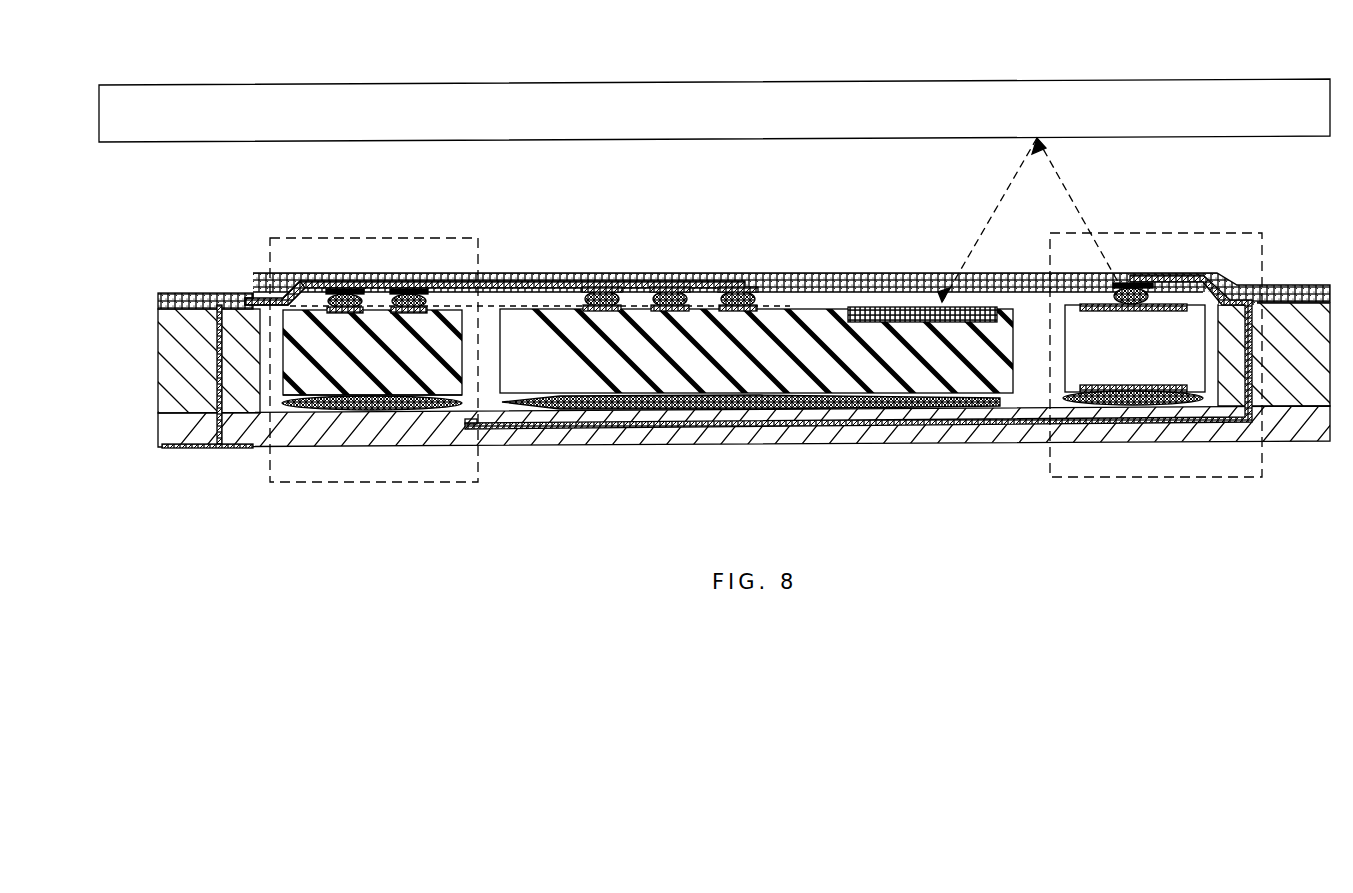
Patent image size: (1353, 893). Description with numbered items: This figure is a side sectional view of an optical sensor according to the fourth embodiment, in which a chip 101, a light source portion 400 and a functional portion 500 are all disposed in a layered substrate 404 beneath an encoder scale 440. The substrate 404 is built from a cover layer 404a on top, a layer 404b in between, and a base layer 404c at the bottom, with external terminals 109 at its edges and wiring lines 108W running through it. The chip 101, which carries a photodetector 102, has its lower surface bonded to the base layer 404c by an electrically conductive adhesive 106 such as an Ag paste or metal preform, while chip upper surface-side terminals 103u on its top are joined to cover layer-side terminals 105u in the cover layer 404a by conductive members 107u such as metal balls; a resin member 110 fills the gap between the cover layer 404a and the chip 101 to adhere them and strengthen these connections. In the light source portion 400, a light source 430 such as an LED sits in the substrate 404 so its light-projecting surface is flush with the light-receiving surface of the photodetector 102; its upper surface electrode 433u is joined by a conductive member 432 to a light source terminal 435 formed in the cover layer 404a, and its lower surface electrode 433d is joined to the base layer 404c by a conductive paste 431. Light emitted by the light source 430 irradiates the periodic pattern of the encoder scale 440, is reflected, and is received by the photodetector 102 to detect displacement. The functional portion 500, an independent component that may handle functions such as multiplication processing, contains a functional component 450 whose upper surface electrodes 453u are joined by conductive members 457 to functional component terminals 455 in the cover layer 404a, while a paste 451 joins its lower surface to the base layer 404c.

The encoder scale 440 is at (592, 85).
The substrate 404 is at (97, 443).
The cover layer 404a is at (158, 305).
The substrate middle layer 404b is at (158, 357).
The base layer 404c is at (158, 428).
The external terminals 109 is at (189, 293).
The wiring lines 108W is at (283, 292).
The resin member 110 is at (520, 300).
The functional portion 500 is at (377, 482).
The functional component 450 is at (355, 375).
The upper surface electrodes 453u is at (345, 408).
The paste 451 is at (432, 400).
The functional component terminals 455 is at (345, 292).
The conductive members 457 is at (335, 305).
The chip 101 is at (548, 375).
The photodetector 102 is at (880, 307).
The adhesive 106 is at (802, 410).
The conductive members 107u is at (598, 292).
The cover layer-side terminals 105u is at (612, 288).
The chip upper surface-side terminals 103u is at (605, 312).
The light source portion 400 is at (1088, 477).
The light source 430 is at (1080, 350).
The conductive member 432 is at (1160, 304).
The lower surface electrode 433d is at (1180, 385).
The upper surface electrode 433u is at (1150, 285).
The light source terminal 435 is at (1131, 288).
The conductive paste 431 is at (1133, 405).